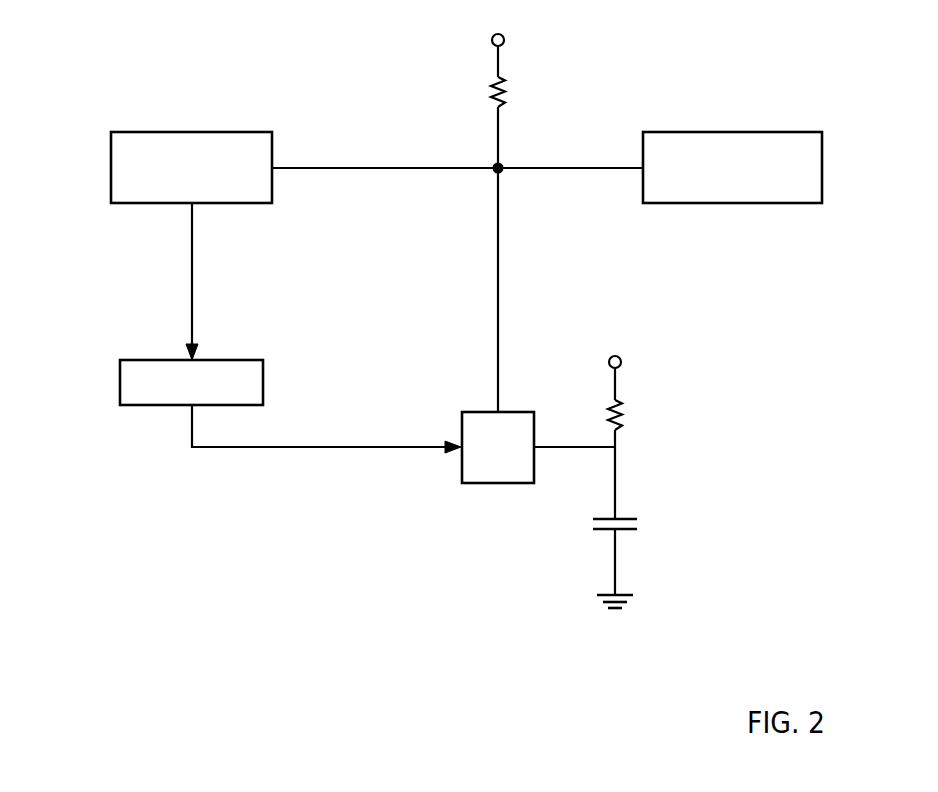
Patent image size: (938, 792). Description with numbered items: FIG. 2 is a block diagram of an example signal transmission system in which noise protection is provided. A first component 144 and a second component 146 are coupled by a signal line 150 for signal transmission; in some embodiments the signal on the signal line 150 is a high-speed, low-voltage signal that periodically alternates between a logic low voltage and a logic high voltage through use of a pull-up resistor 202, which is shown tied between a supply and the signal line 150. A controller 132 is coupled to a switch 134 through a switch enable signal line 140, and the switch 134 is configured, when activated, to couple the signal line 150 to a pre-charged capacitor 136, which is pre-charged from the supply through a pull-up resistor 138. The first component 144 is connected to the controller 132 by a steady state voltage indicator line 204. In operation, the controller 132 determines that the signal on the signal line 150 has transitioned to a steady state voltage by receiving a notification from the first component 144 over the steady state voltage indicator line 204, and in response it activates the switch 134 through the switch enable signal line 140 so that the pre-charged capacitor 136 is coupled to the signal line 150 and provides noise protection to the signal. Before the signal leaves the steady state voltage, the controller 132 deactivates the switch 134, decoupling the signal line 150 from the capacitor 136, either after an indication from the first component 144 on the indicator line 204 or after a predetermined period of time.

The controller 132 is at (252, 391).
The switch 134 is at (482, 471).
The pre-charged capacitor 136 is at (677, 560).
The pull-up resistor 138 is at (677, 460).
The switch enable signal line 140 is at (308, 543).
The first component 144 is at (177, 191).
The second component 146 is at (716, 190).
The signal line 150 is at (422, 195).
The pull-up resistor 202 is at (440, 135).
The steady state voltage indicator line 204 is at (143, 316).